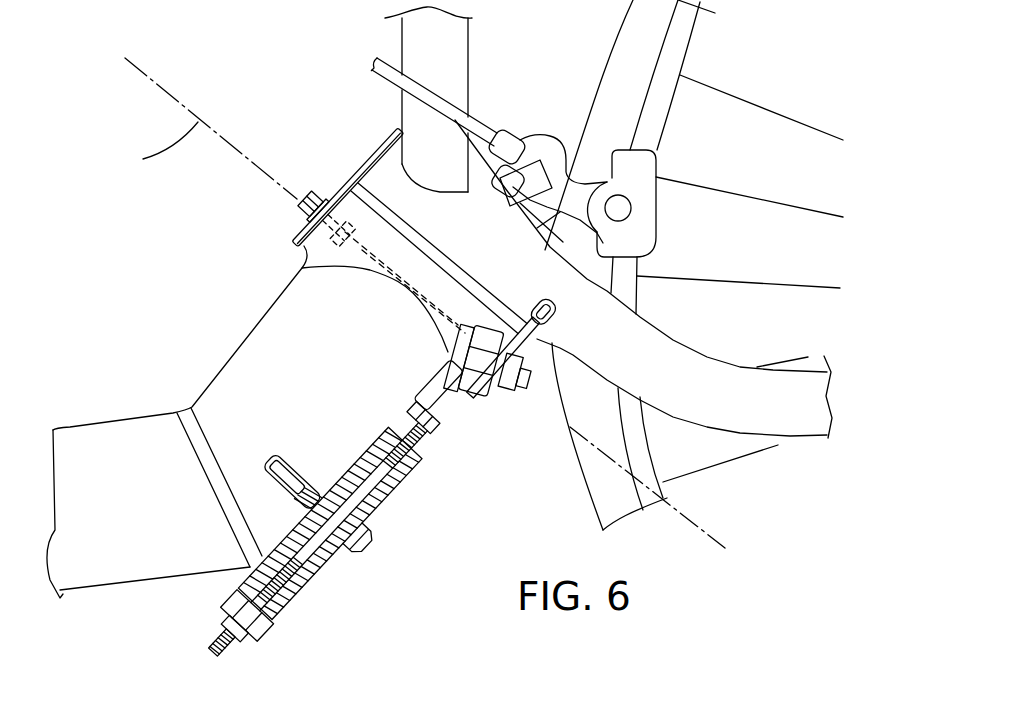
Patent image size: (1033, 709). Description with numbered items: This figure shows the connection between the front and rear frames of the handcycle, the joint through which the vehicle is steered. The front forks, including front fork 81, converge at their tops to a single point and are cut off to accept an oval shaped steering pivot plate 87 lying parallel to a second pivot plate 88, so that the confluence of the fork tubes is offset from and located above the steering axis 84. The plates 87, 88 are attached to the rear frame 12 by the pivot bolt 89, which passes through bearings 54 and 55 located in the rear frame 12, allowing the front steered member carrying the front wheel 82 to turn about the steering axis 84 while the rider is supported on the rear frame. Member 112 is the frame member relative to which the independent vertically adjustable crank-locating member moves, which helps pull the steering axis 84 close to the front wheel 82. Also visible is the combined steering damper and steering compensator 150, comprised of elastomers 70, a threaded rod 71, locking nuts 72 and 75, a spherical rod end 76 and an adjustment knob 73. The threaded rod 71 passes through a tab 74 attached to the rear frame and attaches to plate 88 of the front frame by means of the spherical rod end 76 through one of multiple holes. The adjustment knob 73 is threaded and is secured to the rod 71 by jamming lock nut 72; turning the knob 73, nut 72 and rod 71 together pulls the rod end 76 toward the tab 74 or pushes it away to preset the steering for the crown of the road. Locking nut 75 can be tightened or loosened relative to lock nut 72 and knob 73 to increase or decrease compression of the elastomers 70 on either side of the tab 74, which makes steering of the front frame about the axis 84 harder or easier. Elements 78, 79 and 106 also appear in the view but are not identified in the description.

The rear frame 12 is at (248, 363).
The bearing 54 is at (293, 267).
The bearing 55 is at (496, 302).
The elastomers 70 is at (310, 588).
The threaded rod 71 is at (215, 650).
The locking nut 72 is at (230, 630).
The adjustment knob 73 is at (270, 628).
The tab 74 is at (363, 547).
The locking nut 75 is at (427, 440).
The spherical rod end 76 is at (449, 398).
The washer 78 is at (450, 353).
The nut 79 is at (508, 392).
The front fork 81 is at (688, 358).
The front wheel 82 is at (613, 63).
The steering axis 84 is at (135, 162).
The steering pivot plate 87 is at (338, 190).
The steering pivot plate 88 is at (516, 343).
The pivot bolt 89 is at (293, 215).
The clamp bracket 106 is at (641, 221).
The member 112 is at (458, 58).
The combined steering damper and steering compensator 150 is at (390, 490).